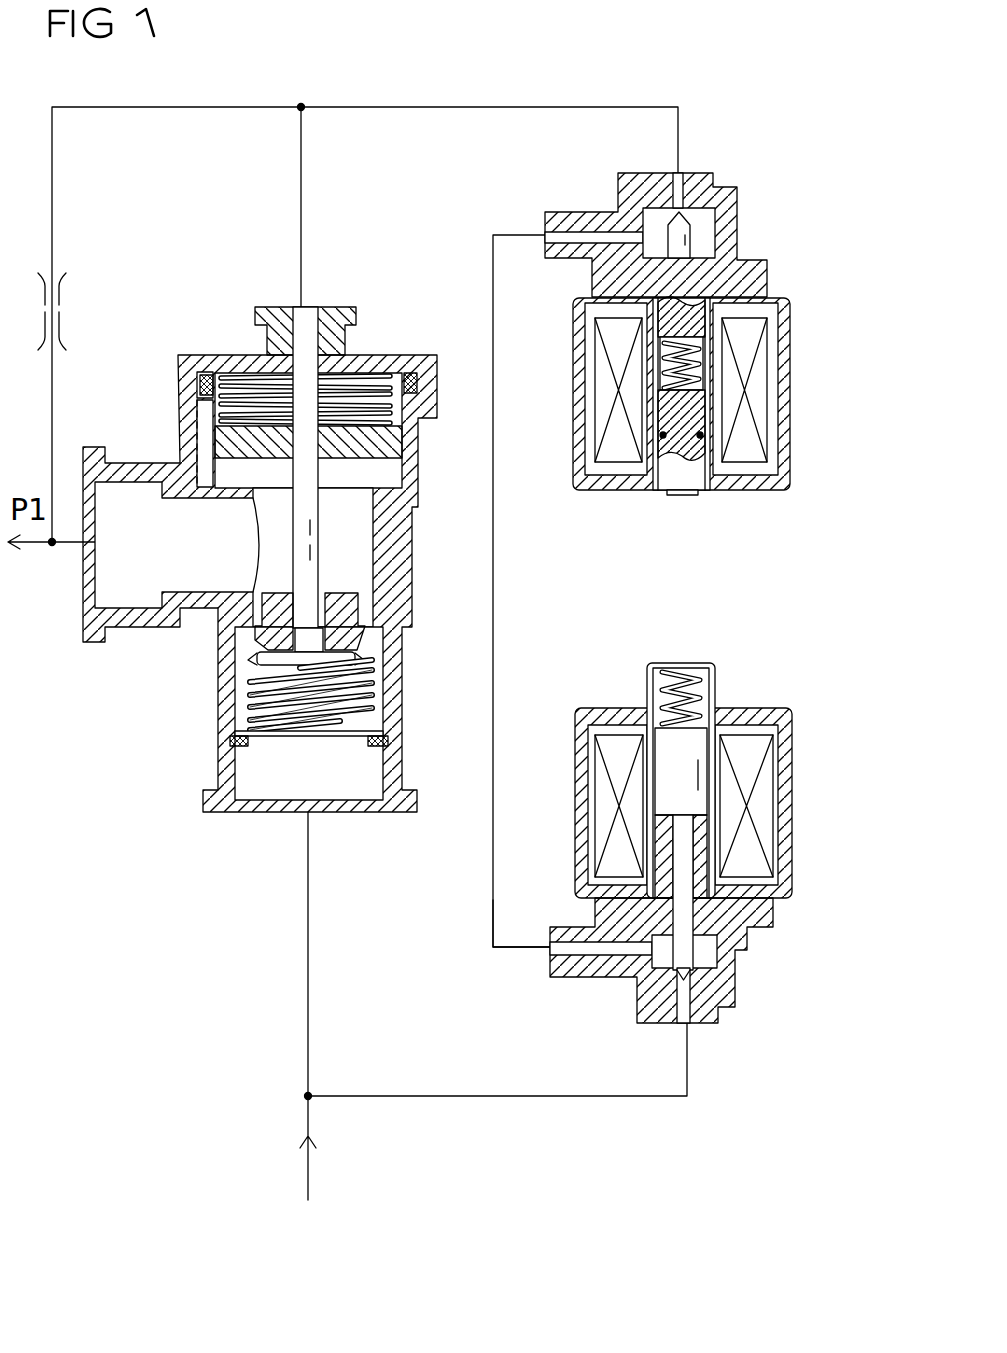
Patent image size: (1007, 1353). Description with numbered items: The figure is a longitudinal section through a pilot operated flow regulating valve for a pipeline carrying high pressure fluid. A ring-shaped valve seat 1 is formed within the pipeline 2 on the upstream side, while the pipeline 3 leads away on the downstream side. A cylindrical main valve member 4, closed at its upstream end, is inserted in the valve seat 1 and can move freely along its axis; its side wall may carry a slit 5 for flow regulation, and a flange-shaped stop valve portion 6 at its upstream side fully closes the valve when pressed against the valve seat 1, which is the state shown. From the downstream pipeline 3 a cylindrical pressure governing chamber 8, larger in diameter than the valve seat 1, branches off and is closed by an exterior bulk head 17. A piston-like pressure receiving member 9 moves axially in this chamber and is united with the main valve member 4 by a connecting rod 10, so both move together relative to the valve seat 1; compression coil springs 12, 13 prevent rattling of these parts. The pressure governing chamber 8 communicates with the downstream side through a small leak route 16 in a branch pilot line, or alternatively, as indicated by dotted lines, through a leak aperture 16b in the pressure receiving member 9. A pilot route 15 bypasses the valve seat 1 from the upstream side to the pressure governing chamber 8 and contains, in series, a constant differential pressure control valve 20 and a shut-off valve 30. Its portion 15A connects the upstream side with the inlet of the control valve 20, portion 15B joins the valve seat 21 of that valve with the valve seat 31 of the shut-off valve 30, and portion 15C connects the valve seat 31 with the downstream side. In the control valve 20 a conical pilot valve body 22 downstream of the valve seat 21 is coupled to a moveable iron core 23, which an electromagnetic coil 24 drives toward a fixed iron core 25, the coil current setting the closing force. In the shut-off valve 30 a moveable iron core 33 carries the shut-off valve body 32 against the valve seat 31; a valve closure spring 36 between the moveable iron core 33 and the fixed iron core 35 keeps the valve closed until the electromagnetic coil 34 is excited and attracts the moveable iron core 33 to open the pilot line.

The valve seat 1 is at (262, 647).
The pipeline 2 is at (300, 1027).
The pipeline 3 is at (40, 546).
The main valve member 4 is at (268, 630).
The slit 5 is at (404, 636).
The stop valve portion 6 is at (287, 672).
The pressure governing chamber 8 is at (214, 416).
The pressure receiving member 9 is at (380, 455).
The connecting rod 10 is at (318, 528).
The compression coil spring 12 is at (293, 738).
The compression coil spring 13 is at (360, 378).
The pilot route 15 is at (480, 855).
The pilot route portion 15A is at (505, 1099).
The pilot route portion 15B is at (493, 912).
The pilot route portion 15C is at (422, 106).
The leak route 16 is at (62, 317).
The leak aperture 16b is at (215, 442).
The exterior bulk head 17 is at (240, 358).
The constant differential pressure control valve 20 is at (671, 826).
The valve seat 21 is at (645, 998).
The pilot valve body 22 is at (692, 956).
The moveable iron core 23 is at (668, 748).
The electromagnetic coil 24 is at (746, 750).
The fixed iron core 25 is at (660, 870).
The shut-off valve 30 is at (650, 360).
The valve seat 31 is at (672, 206).
The shut-off valve body 32 is at (691, 214).
The moveable iron core 33 is at (652, 335).
The electromagnetic coil 34 is at (741, 452).
The fixed iron core 35 is at (660, 411).
The valve closure spring 36 is at (664, 366).